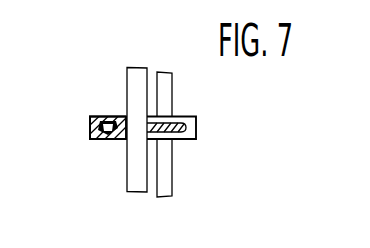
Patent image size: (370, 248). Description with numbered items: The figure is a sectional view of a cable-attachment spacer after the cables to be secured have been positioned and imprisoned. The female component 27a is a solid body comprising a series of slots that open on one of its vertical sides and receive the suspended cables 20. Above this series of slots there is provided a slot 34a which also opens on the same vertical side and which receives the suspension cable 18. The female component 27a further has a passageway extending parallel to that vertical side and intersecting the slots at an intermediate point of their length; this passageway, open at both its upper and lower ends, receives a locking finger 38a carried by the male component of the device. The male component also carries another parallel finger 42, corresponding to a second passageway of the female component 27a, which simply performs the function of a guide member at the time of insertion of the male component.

The suspension cable 18 is at (132, 93).
The suspended cables 20 is at (162, 80).
The parallel finger 42 is at (97, 114).
The locking finger 38a is at (187, 118).
The female component 27a is at (108, 140).
The slot 34a is at (176, 140).